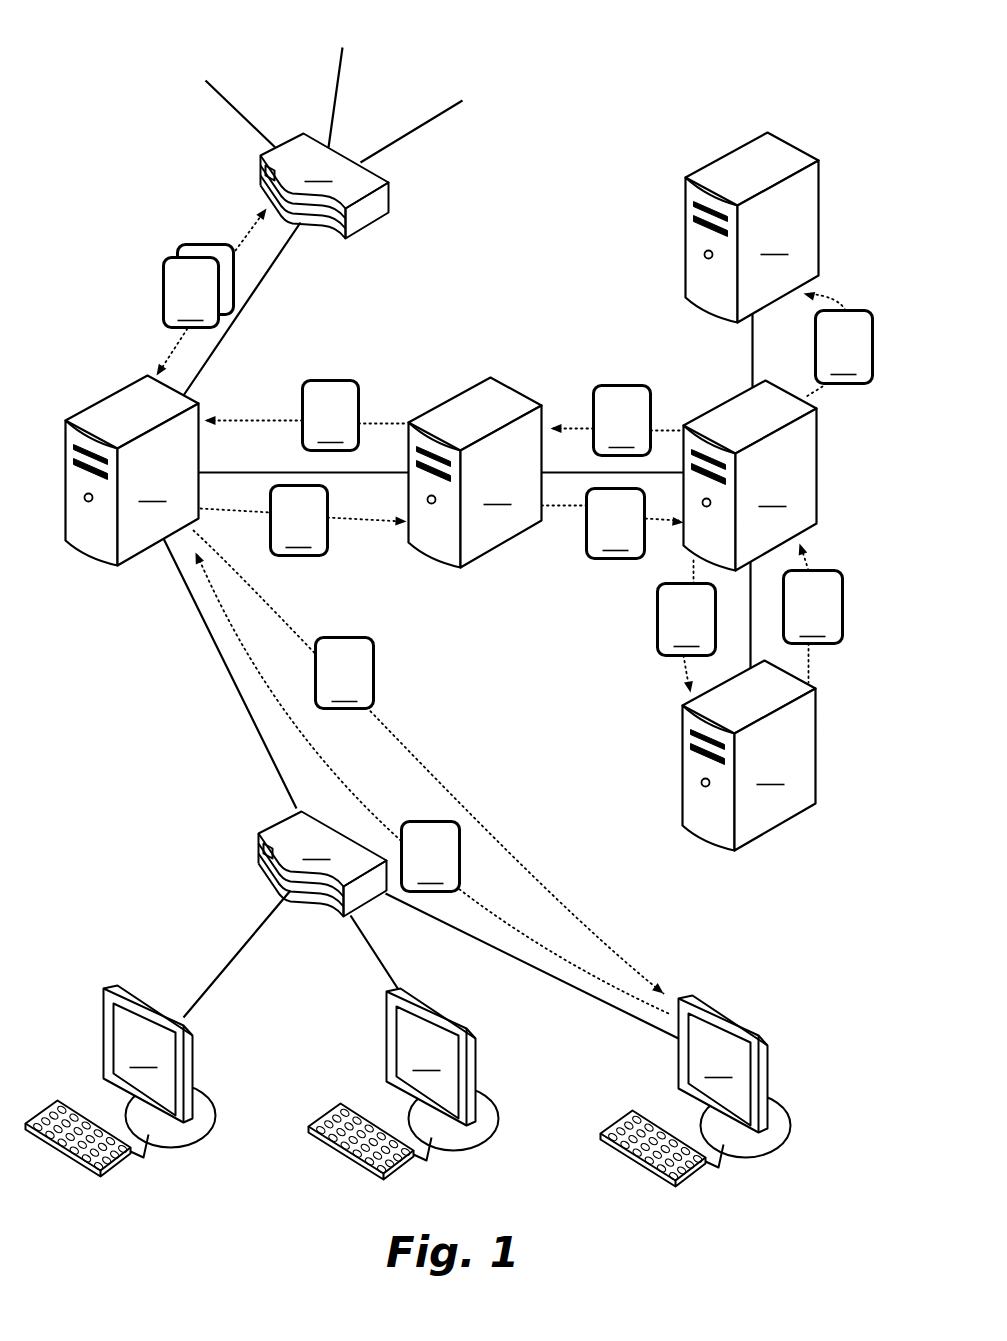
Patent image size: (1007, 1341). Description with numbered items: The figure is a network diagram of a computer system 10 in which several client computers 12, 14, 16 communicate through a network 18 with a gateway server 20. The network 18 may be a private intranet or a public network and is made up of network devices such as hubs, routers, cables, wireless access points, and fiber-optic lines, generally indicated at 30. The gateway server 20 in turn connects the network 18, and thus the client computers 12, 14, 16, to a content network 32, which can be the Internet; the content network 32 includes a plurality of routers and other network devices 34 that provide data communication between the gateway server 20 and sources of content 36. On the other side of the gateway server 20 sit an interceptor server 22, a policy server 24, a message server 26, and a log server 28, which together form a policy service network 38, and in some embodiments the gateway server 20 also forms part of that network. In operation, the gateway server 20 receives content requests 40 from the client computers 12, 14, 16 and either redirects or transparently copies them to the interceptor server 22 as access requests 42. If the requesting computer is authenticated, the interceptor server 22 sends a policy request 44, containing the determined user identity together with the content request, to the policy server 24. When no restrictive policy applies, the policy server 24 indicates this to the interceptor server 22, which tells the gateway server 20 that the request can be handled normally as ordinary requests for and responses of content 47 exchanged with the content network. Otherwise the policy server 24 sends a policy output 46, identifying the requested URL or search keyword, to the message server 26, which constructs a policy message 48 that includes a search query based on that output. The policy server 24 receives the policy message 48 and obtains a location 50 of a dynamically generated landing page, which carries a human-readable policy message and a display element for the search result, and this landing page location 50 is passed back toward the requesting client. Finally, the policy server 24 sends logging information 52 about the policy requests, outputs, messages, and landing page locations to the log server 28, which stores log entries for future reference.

The computer system 10 is at (594, 143).
The client computer 12 is at (121, 1081).
The client computer 14 is at (404, 1084).
The client computer 16 is at (696, 1091).
The network 18 is at (228, 885).
The gateway server 20 is at (132, 471).
The interceptor server 22 is at (475, 473).
The policy server 24 is at (750, 476).
The message server 26 is at (749, 756).
The log server 28 is at (752, 228).
The network devices 30 is at (323, 864).
The content network 32 is at (238, 155).
The routers and other network devices 34 is at (325, 186).
The sources of content 36 is at (331, 28).
The policy service network 38 is at (513, 670).
The content request 40 is at (432, 783).
The access request 42 is at (304, 521).
The policy request 44 is at (613, 524).
The policy output 46 is at (687, 627).
The requests for and responses of content 47 is at (212, 292).
The policy message 48 is at (813, 613).
The landing page location 50 is at (438, 687).
The logging information 52 is at (838, 344).